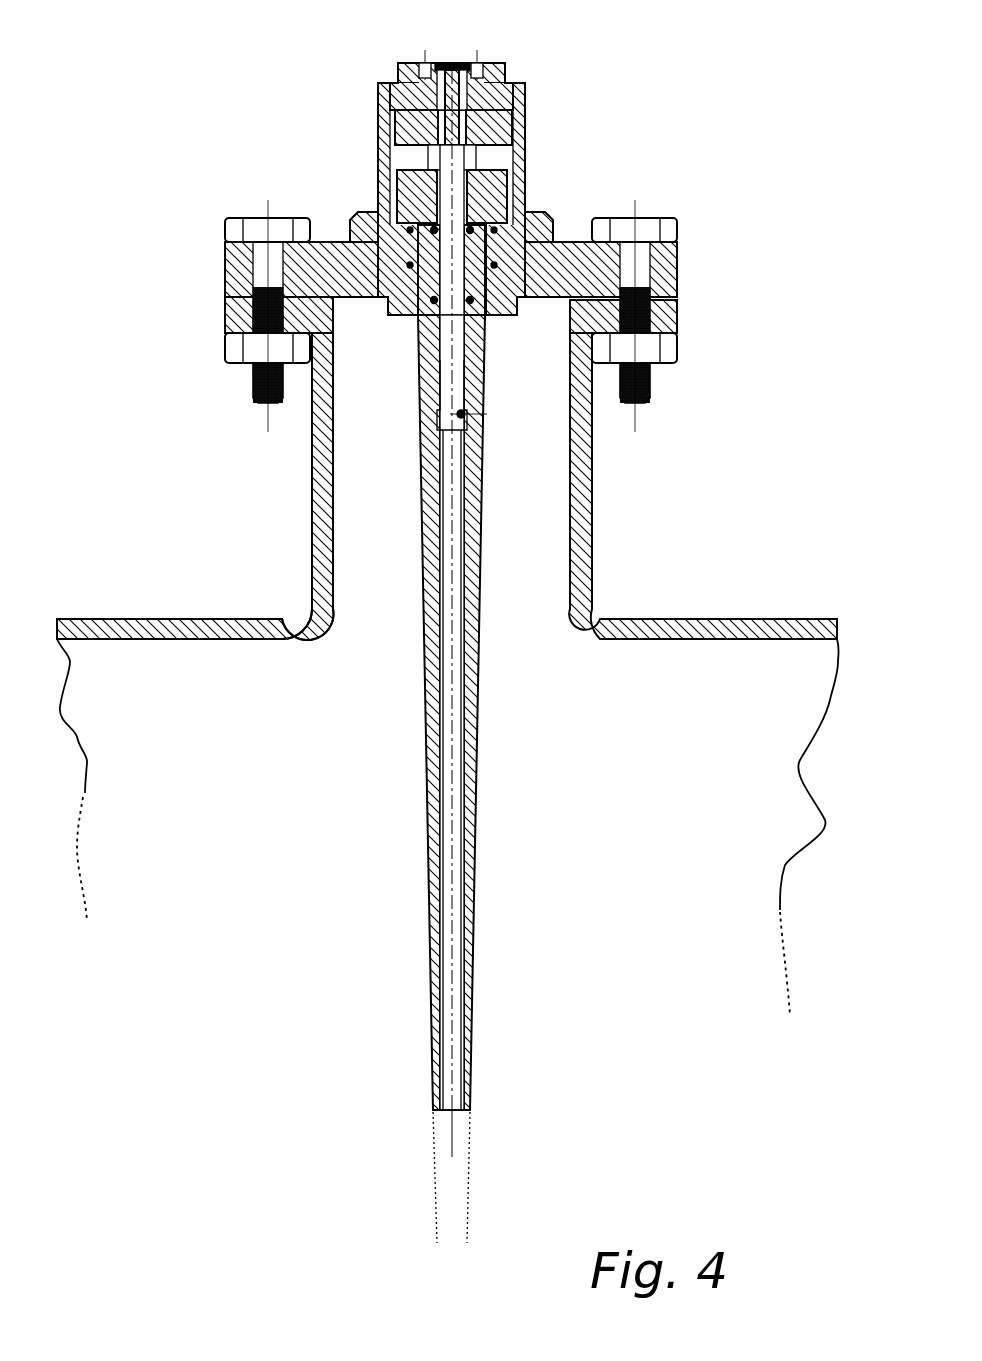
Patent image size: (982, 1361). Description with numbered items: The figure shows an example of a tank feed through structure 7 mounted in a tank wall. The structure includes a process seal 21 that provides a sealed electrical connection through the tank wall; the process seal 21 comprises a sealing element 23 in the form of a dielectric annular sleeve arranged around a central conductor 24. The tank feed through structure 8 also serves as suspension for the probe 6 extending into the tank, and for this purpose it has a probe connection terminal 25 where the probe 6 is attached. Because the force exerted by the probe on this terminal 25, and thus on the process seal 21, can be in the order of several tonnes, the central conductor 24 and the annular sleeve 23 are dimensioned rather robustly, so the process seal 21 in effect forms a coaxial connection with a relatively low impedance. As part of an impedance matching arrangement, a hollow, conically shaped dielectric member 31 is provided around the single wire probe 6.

The tank feed through structure 7 is at (556, 73).
The central conductor 24 is at (432, 156).
The sealing element 23 is at (408, 195).
The process seal 21 is at (383, 338).
The probe connection terminal 25 is at (440, 416).
The tank feed through structure 8 is at (392, 657).
The conically shaped dielectric member 31 is at (425, 768).
The probe 6 is at (470, 1045).